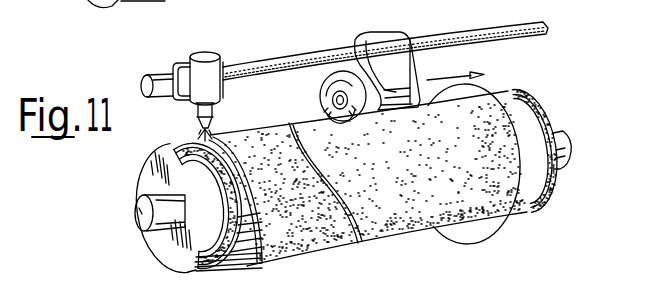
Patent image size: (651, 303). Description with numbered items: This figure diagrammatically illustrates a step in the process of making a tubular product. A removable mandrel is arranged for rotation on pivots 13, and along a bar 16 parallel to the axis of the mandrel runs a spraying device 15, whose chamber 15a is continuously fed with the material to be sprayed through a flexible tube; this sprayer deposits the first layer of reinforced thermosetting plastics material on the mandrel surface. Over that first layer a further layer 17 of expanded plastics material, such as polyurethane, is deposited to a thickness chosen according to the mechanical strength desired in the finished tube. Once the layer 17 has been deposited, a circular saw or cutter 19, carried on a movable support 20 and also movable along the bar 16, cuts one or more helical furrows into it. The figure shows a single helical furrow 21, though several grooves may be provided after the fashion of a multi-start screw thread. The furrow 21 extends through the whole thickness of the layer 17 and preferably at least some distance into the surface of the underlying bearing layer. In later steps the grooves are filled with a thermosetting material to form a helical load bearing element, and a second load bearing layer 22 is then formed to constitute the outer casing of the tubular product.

The pivots 13 is at (133, 214).
The spraying device 15 is at (217, 108).
The chamber 15a is at (205, 78).
The bar 16 is at (452, 33).
The layer of expanded plastics material 17 is at (173, 145).
The circular saw 19 is at (322, 95).
The movable support 20 is at (407, 80).
The helical furrow 21 is at (358, 243).
The second load bearing layer 22 is at (255, 266).